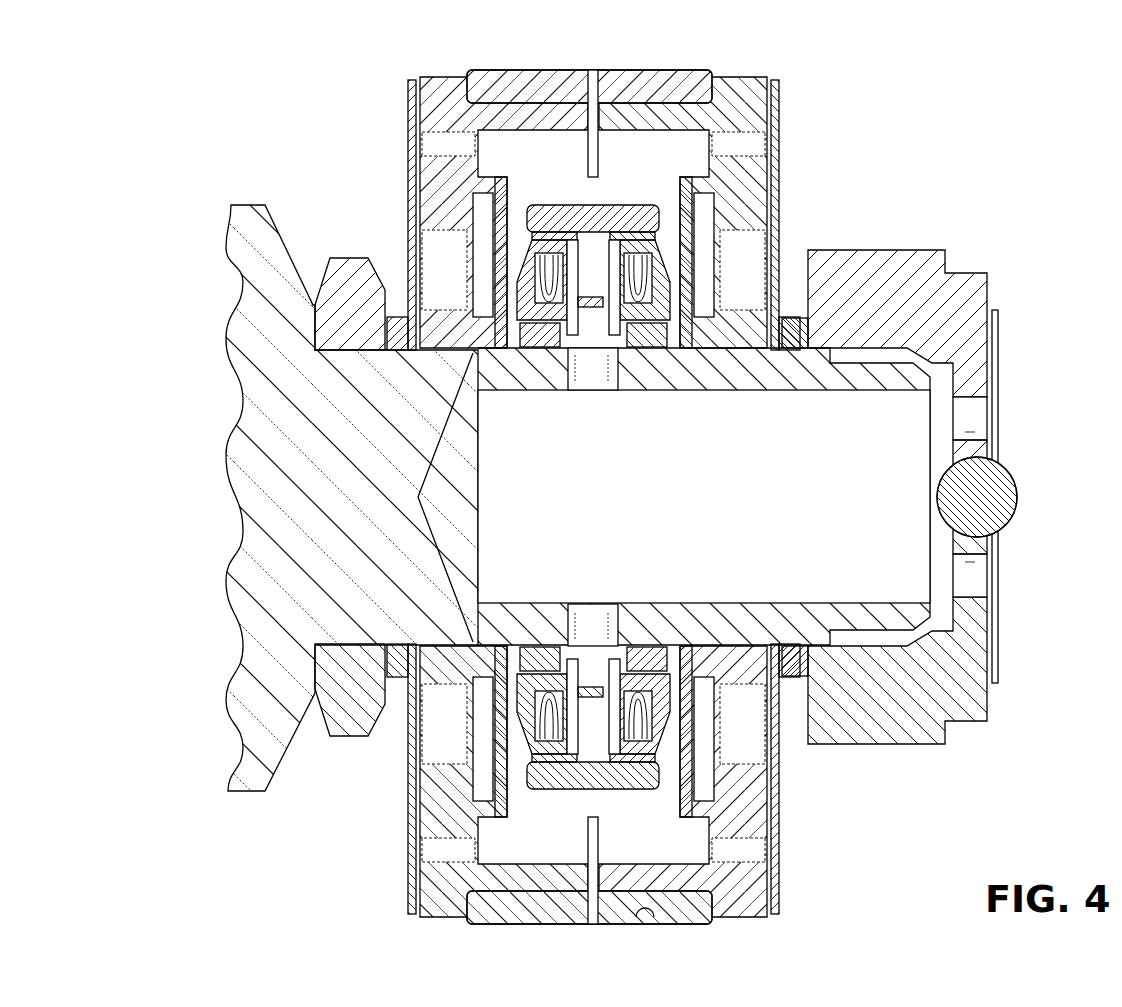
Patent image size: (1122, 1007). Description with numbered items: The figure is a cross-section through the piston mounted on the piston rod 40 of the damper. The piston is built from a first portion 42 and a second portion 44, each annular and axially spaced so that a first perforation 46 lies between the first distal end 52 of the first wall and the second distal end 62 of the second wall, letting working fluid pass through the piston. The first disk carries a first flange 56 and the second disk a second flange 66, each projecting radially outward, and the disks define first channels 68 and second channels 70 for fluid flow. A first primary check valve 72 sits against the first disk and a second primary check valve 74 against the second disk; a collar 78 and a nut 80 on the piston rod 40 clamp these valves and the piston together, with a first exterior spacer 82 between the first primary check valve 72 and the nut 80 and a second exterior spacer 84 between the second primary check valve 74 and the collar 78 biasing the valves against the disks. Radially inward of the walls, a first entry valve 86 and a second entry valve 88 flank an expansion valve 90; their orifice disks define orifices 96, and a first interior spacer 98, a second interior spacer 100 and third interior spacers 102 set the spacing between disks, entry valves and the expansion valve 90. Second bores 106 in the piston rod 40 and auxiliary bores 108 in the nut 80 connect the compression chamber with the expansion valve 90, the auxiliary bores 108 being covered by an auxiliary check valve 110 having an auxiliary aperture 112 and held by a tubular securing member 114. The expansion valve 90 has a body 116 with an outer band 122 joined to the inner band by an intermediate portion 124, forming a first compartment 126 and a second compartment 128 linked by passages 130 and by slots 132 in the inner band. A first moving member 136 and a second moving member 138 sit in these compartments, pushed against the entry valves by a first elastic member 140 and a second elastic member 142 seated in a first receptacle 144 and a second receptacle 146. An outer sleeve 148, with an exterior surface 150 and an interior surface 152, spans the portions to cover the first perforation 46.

The piston rod 40 is at (258, 203).
The first portion 42 is at (762, 98).
The second portion 44 is at (428, 80).
The first perforation 46 is at (590, 95).
The first distal end 52 is at (657, 112).
The first flange 56 is at (733, 92).
The second distal end 62 is at (496, 102).
The second flange 66 is at (452, 80).
The first channels 68 is at (758, 147).
The second channels 70 is at (440, 147).
The first primary check valve 72 is at (775, 100).
The second primary check valve 74 is at (405, 92).
The collar 78 is at (345, 256).
The nut 80 is at (962, 253).
The first exterior spacer 82 is at (796, 330).
The second exterior spacer 84 is at (397, 645).
The first entry valve 86 is at (691, 834).
The second entry valve 88 is at (440, 880).
The expansion valve 90 is at (551, 805).
The orifices 96 is at (779, 205).
The first interior spacer 98 is at (704, 330).
The second interior spacer 100 is at (458, 385).
The third interior spacers 102 is at (520, 294).
The second bores 106 is at (590, 392).
The auxiliary bores 108 is at (982, 425).
The auxiliary check valve 110 is at (1000, 650).
The auxiliary aperture 112 is at (996, 410).
The securing member 114 is at (1017, 495).
The body 116 is at (576, 226).
The outer band 122 is at (608, 215).
The intermediate portion 124 is at (600, 394).
The first compartment 126 is at (600, 752).
The second compartment 128 is at (580, 640).
The passages 130 is at (588, 268).
The slots 132 is at (576, 394).
The first moving member 136 is at (640, 215).
The second moving member 138 is at (543, 210).
The first elastic member 140 is at (665, 712).
The second elastic member 142 is at (520, 720).
The first receptacle 144 is at (634, 732).
The second receptacle 146 is at (497, 830).
The outer sleeve 148 is at (603, 72).
The exterior surface 150 is at (588, 926).
The interior surface 152 is at (645, 885).